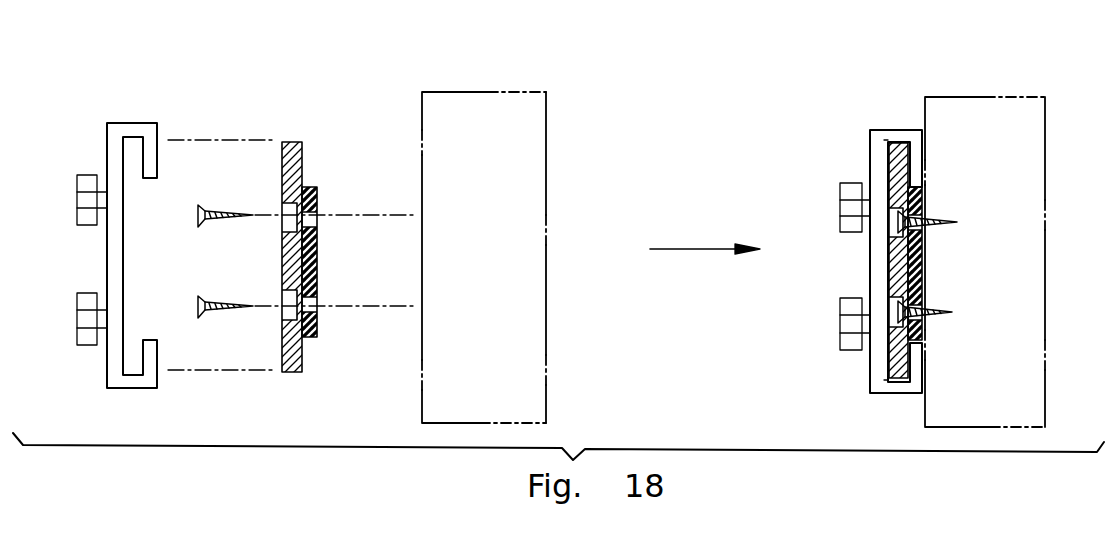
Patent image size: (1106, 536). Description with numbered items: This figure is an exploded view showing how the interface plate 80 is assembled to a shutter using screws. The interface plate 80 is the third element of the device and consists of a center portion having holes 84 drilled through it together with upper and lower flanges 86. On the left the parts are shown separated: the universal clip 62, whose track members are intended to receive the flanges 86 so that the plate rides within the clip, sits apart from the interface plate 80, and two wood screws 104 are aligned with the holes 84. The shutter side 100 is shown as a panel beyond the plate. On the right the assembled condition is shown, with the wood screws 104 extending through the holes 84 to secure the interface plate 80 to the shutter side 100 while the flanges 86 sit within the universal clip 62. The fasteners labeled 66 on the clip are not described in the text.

The universal clip 62 is at (142, 108).
The bolt and nut 66 is at (851, 205).
The interface plate 80 is at (352, 118).
The holes 84 is at (316, 212).
The flanges 86 is at (290, 140).
The shutter side 100 is at (478, 92).
The wood screws 104 is at (198, 213).